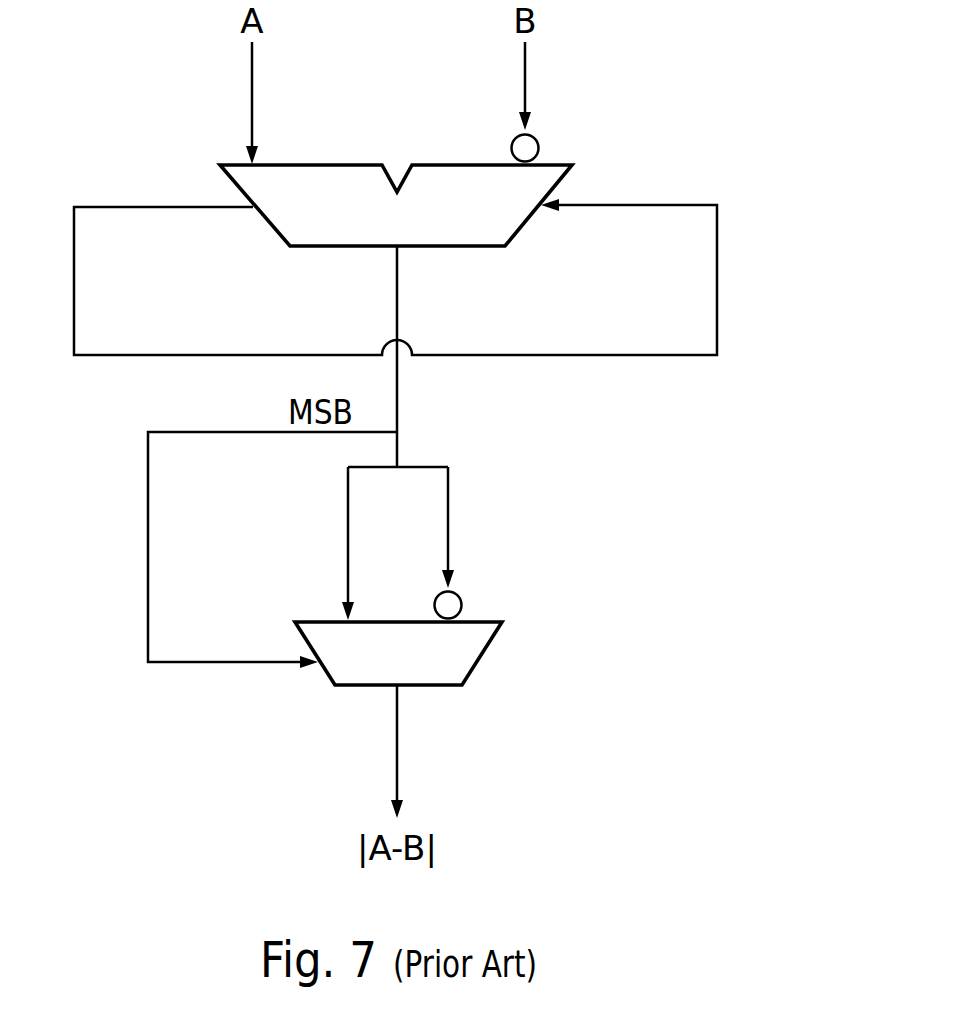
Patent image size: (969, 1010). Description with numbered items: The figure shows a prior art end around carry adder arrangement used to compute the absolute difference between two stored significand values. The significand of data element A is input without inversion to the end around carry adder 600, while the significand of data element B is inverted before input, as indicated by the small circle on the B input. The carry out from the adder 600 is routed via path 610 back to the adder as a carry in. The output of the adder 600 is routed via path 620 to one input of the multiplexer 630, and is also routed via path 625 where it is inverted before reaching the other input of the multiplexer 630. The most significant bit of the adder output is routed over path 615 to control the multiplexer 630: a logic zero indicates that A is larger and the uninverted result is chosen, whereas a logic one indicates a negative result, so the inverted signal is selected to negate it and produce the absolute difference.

The end around carry adder 600 is at (518, 232).
The path 610 is at (717, 272).
The path 615 is at (148, 570).
The path 620 is at (348, 520).
The path 625 is at (448, 505).
The multiplexer 630 is at (478, 660).